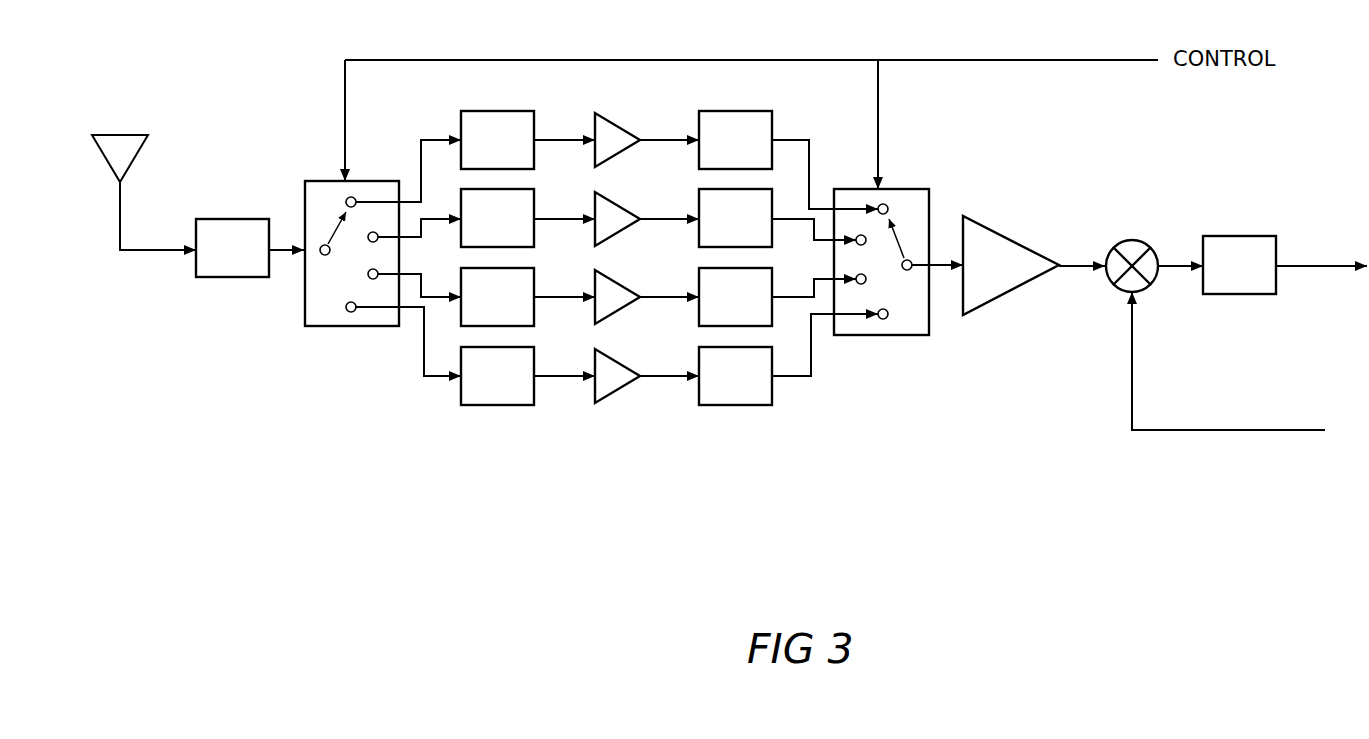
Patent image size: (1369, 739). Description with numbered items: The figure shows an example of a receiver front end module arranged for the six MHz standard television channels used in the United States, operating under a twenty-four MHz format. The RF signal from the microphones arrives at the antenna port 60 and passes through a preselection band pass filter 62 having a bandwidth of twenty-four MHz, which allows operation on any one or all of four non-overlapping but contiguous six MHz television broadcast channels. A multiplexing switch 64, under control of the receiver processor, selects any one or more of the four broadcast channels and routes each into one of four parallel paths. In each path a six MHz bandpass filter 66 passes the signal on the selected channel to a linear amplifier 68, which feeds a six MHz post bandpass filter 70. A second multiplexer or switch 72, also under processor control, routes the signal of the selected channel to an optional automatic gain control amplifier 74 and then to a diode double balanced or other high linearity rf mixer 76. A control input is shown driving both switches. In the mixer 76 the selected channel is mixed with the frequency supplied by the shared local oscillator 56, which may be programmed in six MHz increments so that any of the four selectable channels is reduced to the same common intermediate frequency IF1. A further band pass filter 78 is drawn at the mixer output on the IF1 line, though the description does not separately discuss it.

The local oscillator 56 is at (1198, 430).
The antenna port 60 is at (162, 250).
The preselection band pass filter 62 is at (237, 219).
The multiplexing switch 64 is at (353, 326).
The bandpass filter 66 is at (498, 111).
The linear amplifier 68 is at (620, 127).
The post bandpass filter 70 is at (740, 111).
The second multiplexer or switch 72 is at (912, 189).
The automatic gain control amplifier 74 is at (1008, 235).
The rf mixer 76 is at (1100, 283).
The band pass filter 78 is at (1223, 236).